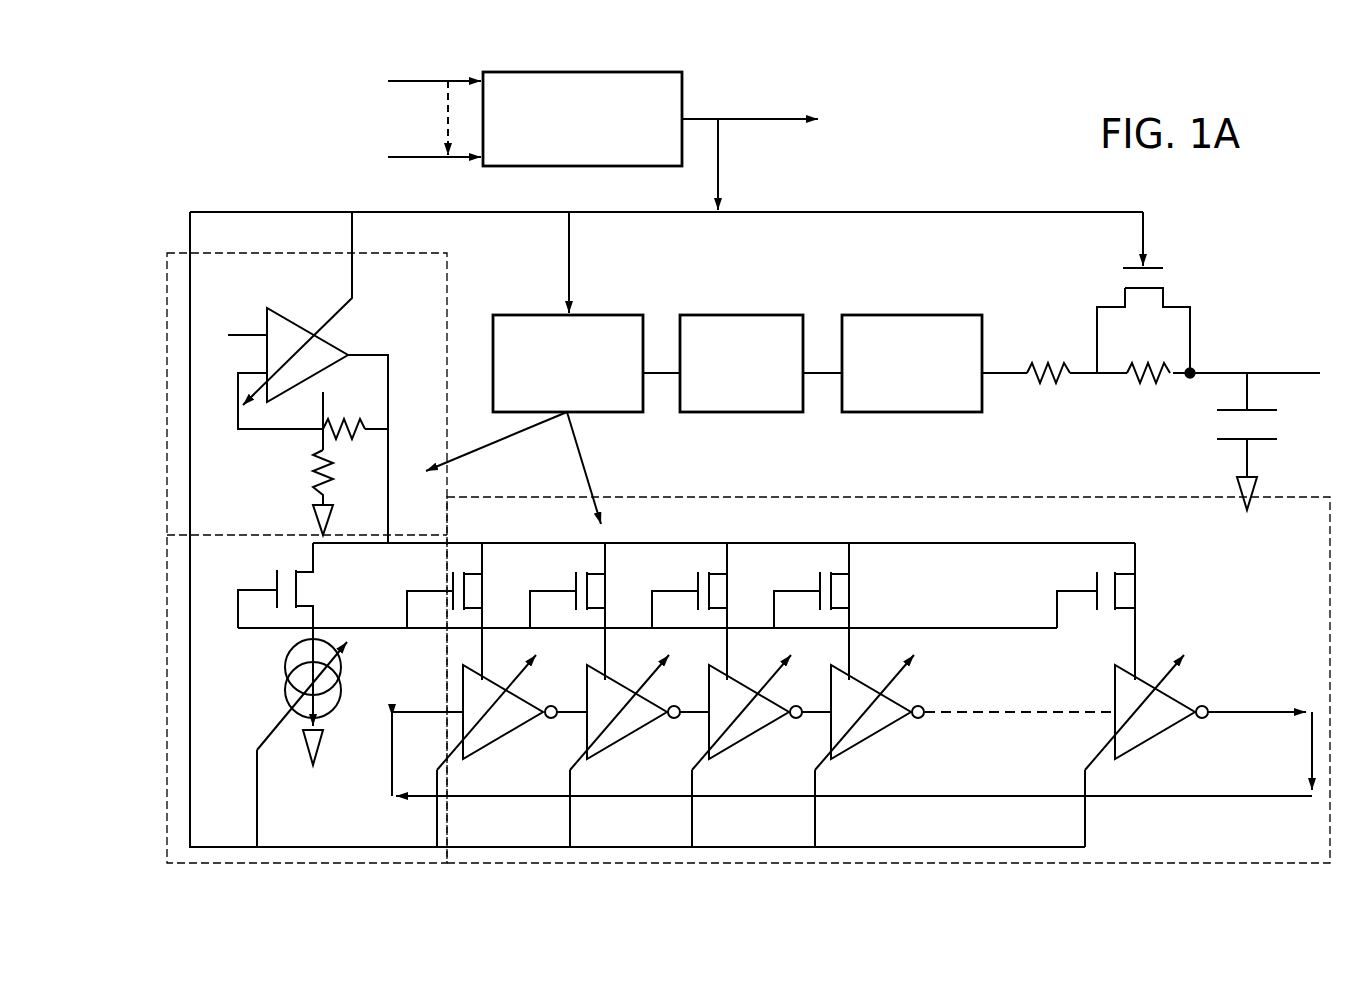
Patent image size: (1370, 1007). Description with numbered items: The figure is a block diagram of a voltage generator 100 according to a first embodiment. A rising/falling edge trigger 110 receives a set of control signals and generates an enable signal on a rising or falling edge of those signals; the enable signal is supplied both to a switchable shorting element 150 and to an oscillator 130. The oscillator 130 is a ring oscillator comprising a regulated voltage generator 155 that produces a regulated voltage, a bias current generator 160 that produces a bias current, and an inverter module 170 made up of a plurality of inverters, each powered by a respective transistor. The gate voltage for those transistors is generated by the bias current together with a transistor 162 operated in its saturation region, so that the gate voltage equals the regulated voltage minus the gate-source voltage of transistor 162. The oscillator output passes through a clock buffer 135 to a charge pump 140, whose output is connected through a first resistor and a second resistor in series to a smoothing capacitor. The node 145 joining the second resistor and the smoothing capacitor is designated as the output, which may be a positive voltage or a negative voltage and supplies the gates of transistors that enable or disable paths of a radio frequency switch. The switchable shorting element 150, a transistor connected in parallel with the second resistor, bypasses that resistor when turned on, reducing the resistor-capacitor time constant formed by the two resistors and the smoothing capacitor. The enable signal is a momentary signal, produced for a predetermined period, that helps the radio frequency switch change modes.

The voltage generator 100 is at (1250, 250).
The rising/falling edge trigger 110 is at (637, 167).
The oscillator 130 is at (538, 313).
The clock buffer 135 is at (743, 313).
The charge pump 140 is at (895, 313).
The node 145 is at (1189, 380).
The switchable shorting element 150 is at (1123, 300).
The regulated voltage generator 155 is at (374, 315).
The bias current generator 160 is at (360, 682).
The transistor 162 is at (322, 590).
The inverter module 170 is at (868, 864).